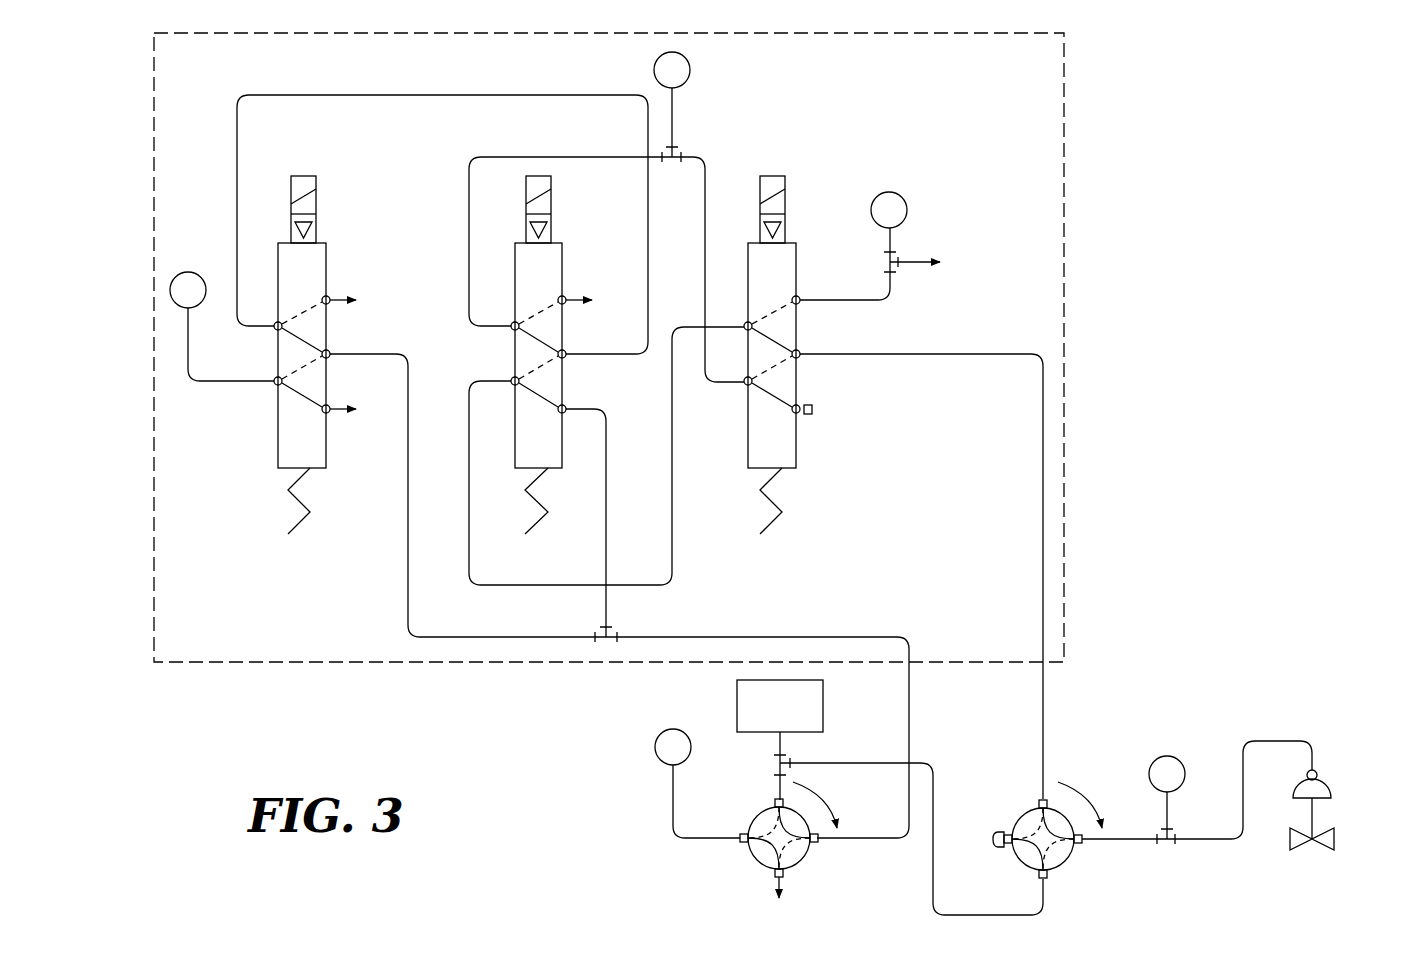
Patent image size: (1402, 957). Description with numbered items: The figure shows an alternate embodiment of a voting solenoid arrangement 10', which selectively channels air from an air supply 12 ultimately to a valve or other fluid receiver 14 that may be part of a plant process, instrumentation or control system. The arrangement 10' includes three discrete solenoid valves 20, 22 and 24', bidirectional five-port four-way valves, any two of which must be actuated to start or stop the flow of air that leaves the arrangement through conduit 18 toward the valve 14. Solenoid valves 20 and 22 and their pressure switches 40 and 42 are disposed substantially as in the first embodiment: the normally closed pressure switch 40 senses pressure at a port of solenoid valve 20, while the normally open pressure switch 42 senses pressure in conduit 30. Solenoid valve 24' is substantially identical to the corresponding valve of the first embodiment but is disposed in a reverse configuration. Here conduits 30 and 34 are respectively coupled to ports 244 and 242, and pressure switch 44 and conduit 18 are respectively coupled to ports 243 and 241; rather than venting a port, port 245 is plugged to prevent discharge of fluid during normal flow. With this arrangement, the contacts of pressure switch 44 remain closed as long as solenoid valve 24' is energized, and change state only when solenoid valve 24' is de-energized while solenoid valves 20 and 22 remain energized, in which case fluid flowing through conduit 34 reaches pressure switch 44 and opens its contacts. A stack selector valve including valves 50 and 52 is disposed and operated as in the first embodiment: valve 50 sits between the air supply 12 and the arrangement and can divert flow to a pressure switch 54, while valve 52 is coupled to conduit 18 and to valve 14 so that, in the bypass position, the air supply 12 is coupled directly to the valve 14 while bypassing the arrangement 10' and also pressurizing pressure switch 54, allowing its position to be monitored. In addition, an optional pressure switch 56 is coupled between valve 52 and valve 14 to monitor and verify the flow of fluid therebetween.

The voting solenoid arrangement 10' is at (648, 347).
The air supply 12 is at (737, 706).
The valve 14 is at (1336, 843).
The conduit 18 is at (1045, 722).
The solenoid valve 20 is at (326, 260).
The solenoid valve 22 is at (562, 259).
The solenoid valve 24' is at (811, 355).
The conduit 30 is at (469, 238).
The conduit 34 is at (672, 548).
The pressure switch 40 is at (189, 271).
The pressure switch 42 is at (690, 70).
The pressure switch 44 is at (907, 207).
The valve 50 is at (805, 860).
The valve 52 is at (1072, 860).
The pressure switch 54 is at (655, 745).
The pressure switch 56 is at (1168, 756).
The port 241 is at (800, 358).
The port 242 is at (744, 326).
The port 243 is at (800, 305).
The port 244 is at (745, 384).
The port 245 is at (800, 414).